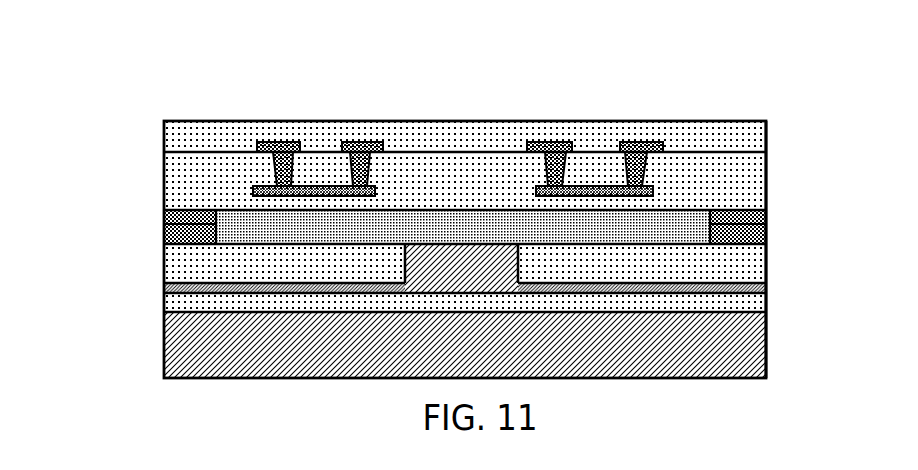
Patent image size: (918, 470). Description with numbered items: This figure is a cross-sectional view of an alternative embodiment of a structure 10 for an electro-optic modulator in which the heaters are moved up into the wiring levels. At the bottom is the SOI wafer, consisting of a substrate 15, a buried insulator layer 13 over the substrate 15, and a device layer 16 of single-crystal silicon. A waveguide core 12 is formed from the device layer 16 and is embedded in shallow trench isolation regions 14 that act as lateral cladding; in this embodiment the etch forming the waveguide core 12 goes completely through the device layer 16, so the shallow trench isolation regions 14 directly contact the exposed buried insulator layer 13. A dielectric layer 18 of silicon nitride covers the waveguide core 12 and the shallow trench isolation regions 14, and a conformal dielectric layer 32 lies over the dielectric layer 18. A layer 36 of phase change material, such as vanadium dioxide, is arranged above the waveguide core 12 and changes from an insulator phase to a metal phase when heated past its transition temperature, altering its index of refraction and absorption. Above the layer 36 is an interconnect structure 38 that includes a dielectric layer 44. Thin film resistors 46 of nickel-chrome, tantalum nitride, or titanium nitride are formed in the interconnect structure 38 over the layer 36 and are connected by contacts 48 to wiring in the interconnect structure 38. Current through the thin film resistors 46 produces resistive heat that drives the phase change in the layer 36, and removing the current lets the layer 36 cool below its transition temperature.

The structure 10 is at (133, 159).
The waveguide core 12 is at (470, 262).
The buried insulator layer 13 is at (742, 308).
The shallow trench isolation regions 14 is at (738, 265).
The substrate 15 is at (173, 350).
The device layer 16 is at (177, 286).
The dielectric layer 18 is at (178, 233).
The conformal dielectric layer 32 is at (745, 217).
The layer 36 is at (507, 222).
The interconnect structure 38 is at (772, 171).
The dielectric layer 44 is at (180, 186).
The thin film resistors 46 is at (310, 186).
The contacts 48 is at (359, 152).